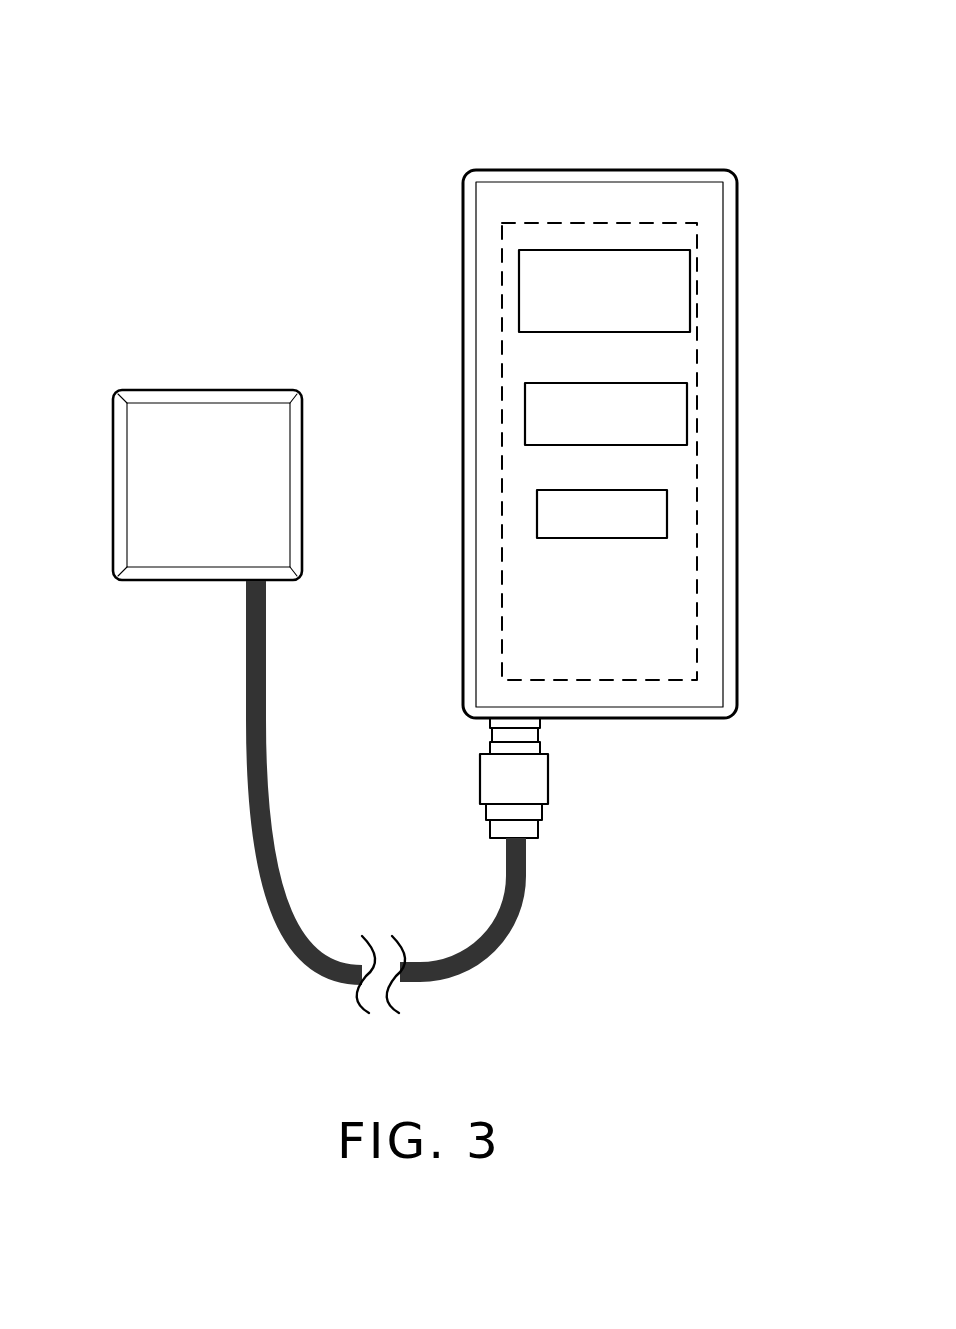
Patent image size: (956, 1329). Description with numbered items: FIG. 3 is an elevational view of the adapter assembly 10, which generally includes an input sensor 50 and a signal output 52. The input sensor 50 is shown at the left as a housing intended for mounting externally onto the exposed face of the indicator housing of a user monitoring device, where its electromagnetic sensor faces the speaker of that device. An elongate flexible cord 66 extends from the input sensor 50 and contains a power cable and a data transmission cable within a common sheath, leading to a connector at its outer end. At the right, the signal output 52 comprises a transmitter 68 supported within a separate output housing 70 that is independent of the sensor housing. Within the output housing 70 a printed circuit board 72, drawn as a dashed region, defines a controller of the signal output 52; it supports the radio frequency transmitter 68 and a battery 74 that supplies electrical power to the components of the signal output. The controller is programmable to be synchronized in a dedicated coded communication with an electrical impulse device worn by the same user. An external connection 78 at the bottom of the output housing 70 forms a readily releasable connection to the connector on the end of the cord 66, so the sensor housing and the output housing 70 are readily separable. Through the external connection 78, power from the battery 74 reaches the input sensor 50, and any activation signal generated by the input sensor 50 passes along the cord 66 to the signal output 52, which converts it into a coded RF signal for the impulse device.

The adapter assembly 10 is at (166, 104).
The input sensor 50 is at (190, 298).
The signal output 52 is at (480, 400).
The flexible cord 66 is at (277, 875).
The transmitter 68 is at (690, 278).
The output housing 70 is at (740, 387).
The printed circuit board 72 is at (697, 466).
The battery 74 is at (667, 510).
The external connection 78 is at (548, 775).